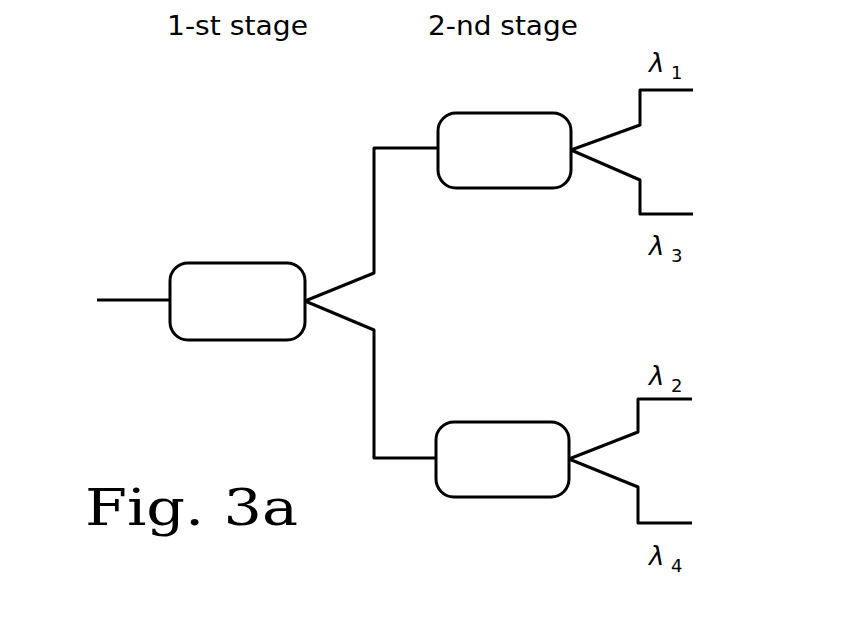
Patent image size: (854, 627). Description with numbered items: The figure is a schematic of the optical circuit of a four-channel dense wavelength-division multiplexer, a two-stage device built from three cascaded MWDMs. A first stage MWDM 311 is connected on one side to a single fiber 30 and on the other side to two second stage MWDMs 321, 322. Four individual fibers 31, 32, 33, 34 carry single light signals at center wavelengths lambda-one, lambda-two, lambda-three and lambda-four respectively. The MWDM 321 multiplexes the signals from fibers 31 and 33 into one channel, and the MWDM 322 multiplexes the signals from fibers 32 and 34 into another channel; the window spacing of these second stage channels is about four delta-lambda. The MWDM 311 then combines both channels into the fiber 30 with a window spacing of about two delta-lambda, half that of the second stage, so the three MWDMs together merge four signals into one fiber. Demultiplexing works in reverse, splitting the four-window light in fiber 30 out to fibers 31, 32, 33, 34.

The fiber 30 is at (113, 301).
The first stage MWDM 311 is at (237, 286).
The second stage MWDM 321 is at (504, 134).
The second stage MWDM 322 is at (502, 442).
The fiber 31 is at (652, 113).
The fiber 32 is at (652, 422).
The fiber 33 is at (653, 189).
The fiber 34 is at (652, 499).